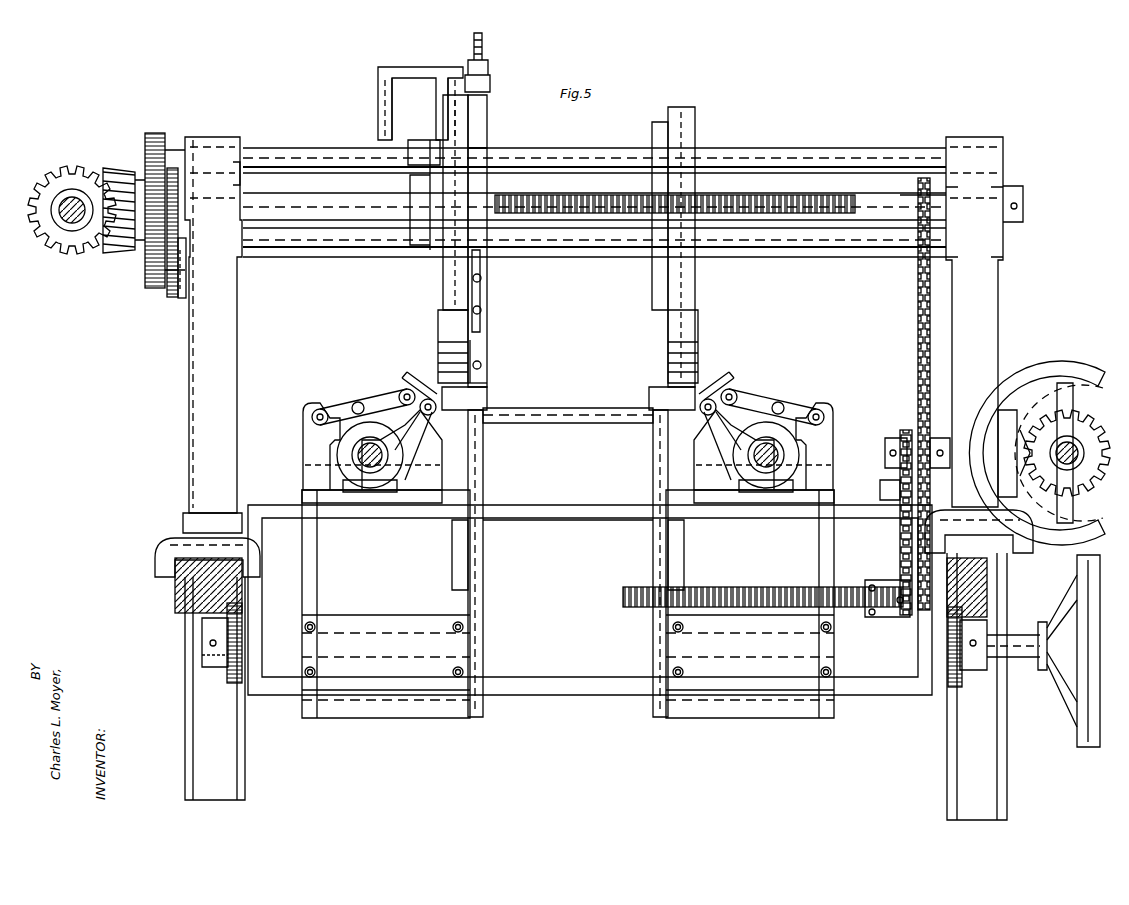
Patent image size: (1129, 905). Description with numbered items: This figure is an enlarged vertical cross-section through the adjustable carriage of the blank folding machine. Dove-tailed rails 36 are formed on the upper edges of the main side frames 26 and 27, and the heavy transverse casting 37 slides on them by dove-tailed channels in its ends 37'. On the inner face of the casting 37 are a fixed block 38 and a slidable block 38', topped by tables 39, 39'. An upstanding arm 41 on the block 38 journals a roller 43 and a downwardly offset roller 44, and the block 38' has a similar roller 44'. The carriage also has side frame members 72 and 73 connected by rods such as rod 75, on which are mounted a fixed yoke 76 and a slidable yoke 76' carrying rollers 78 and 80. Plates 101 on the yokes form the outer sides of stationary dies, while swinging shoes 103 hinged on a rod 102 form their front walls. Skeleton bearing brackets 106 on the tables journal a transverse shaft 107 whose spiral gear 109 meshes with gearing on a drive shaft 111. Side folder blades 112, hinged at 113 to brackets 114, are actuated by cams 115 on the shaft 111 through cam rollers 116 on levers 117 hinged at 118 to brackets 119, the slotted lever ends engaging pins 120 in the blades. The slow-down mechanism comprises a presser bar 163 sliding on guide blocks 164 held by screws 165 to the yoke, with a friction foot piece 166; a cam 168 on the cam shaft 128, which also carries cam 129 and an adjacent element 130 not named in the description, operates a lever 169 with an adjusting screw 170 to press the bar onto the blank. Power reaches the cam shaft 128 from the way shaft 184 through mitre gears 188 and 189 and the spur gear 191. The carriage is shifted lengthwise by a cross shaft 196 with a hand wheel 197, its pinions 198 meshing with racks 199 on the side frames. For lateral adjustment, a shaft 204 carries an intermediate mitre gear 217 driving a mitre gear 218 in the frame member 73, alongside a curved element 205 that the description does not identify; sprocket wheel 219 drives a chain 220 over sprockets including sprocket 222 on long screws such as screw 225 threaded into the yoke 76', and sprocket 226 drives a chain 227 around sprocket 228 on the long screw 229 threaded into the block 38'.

The main side frame 26 is at (230, 757).
The main side frame 27 is at (962, 742).
The dove-tailed rail 36 is at (195, 578).
The transversely disposed casting 37 is at (590, 585).
The casting end 37' is at (594, 543).
The block 38 is at (386, 604).
The slidable block 38' is at (750, 604).
The table 39 is at (372, 514).
The table 39' is at (764, 514).
The upstanding arm 41 is at (483, 470).
The roller 43 is at (475, 405).
The downwardly offset roller 44 is at (440, 555).
The roller 44' is at (694, 555).
The side frame member 72 is at (193, 358).
The side frame member 73 is at (998, 315).
The parallel rod 75 is at (798, 160).
The fixed yoke 76 is at (489, 267).
The slidable yoke 76' is at (652, 247).
The roller 78 is at (445, 350).
The roller 80 is at (487, 118).
The die plate 101 is at (438, 318).
The rod 102 is at (830, 260).
The swinging shoe 103 is at (443, 285).
The skeleton bearing bracket 106 is at (390, 492).
The transverse shaft 107 is at (560, 408).
The spiral gear 109 is at (780, 385).
The drive shaft 111 is at (352, 455).
The side folder blade 112 is at (420, 380).
The hinge 113 is at (425, 420).
The supporting bracket 114 is at (425, 450).
The cam 115 is at (338, 442).
The cam roller 116 is at (355, 402).
The lever 117 is at (338, 398).
The hinge 118 is at (312, 417).
The bracket 119 is at (315, 468).
The pin 120 is at (399, 392).
The cam shaft 128 is at (268, 208).
The cam 129 is at (176, 160).
The collar 130 is at (181, 290).
The presser bar 163 is at (480, 345).
The guide block 164 is at (496, 342).
The screw 165 is at (481, 310).
The foot piece 166 is at (487, 378).
The cam 168 is at (408, 200).
The lever 169 is at (458, 67).
The adjusting screw 170 is at (490, 50).
The way shaft 184 is at (60, 232).
The mitre gear 188 is at (82, 230).
The mitre gear 189 is at (125, 252).
The spur gear 191 is at (155, 128).
The cross shaft 196 is at (1025, 650).
The hand wheel 197 is at (1077, 740).
The pinion 198 is at (228, 683).
The rack 199 is at (210, 603).
The shaft 204 is at (1075, 430).
The segment guard 205 is at (1050, 363).
The intermediate mitre gear 217 is at (1078, 480).
The mitre gear 218 is at (1052, 438).
The sprocket wheel 219 is at (932, 470).
The sprocket chain 220 is at (918, 350).
The sprocket 222 is at (946, 185).
The long screw 225 is at (818, 192).
The sprocket 226 is at (897, 440).
The sprocket chain 227 is at (885, 487).
The sprocket 228 is at (905, 615).
The long screw 229 is at (868, 590).